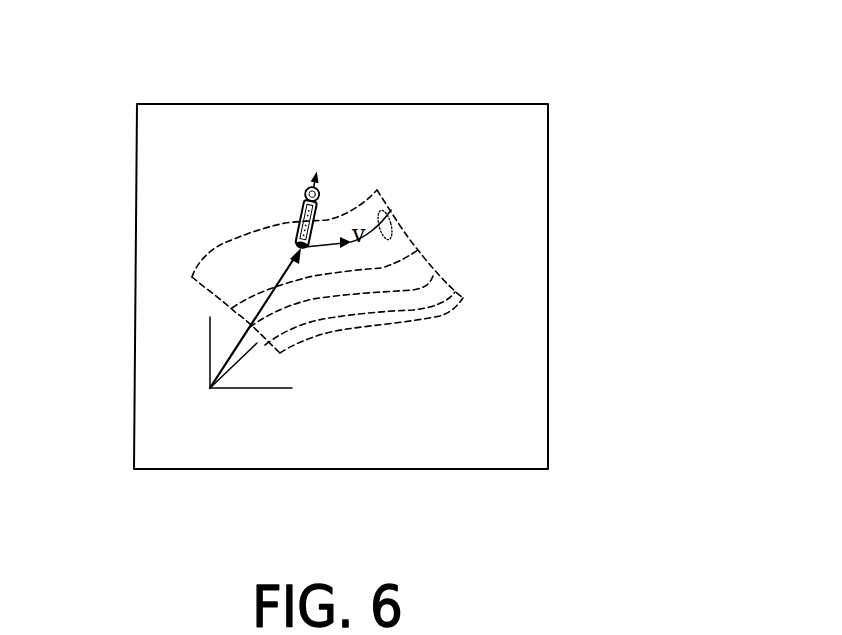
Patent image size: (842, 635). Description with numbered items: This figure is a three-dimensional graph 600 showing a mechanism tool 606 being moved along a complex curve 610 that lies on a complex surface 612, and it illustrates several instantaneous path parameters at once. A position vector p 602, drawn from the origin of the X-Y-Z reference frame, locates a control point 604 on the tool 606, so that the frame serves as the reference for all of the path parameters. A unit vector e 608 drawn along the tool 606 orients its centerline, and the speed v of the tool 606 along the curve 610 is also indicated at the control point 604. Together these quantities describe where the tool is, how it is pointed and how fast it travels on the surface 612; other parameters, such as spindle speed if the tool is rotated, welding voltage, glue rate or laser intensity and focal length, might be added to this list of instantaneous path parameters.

The three-dimensional graph 600 is at (601, 78).
The position vector p 602 is at (212, 384).
The control point 604 is at (300, 248).
The mechanism tool 606 is at (305, 191).
The unit vector e 608 is at (318, 213).
The complex curve 610 is at (391, 210).
The complex surface 612 is at (455, 320).